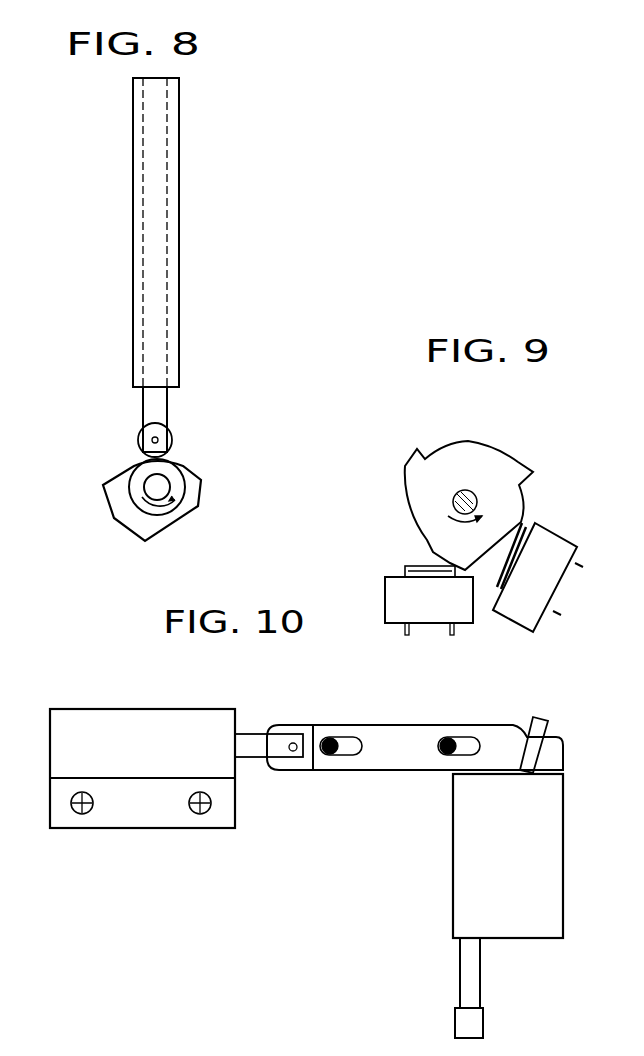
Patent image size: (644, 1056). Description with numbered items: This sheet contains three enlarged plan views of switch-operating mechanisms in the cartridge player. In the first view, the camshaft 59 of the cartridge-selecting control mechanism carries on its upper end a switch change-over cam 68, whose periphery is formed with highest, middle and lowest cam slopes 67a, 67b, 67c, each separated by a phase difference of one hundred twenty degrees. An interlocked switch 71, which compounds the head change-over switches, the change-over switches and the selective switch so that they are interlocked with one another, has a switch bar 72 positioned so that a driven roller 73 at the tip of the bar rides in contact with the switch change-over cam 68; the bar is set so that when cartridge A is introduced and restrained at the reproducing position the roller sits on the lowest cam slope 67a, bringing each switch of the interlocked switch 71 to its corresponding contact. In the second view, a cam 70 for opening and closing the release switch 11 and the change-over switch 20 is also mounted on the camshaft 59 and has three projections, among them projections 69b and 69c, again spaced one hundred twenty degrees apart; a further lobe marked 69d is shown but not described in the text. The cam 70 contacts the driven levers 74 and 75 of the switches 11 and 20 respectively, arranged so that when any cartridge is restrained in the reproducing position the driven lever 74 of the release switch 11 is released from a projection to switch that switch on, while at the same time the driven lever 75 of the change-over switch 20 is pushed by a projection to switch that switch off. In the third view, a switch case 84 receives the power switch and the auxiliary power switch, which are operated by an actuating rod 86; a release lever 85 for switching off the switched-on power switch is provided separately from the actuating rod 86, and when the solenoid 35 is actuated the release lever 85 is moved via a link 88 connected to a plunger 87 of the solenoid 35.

In FIG. 8, the interlocked switch 71 is at (157, 242).
In FIG. 8, the switch bar 72 is at (158, 410).
In FIG. 8, the driven roller 73 is at (172, 440).
In FIG. 8, the camshaft 59 is at (148, 478).
In FIG. 9, the camshaft 59 is at (464, 490).
In FIG. 8, the switch change-over cam 68 is at (118, 500).
In FIG. 8, the lowest cam slope 67a is at (183, 462).
In FIG. 8, the middle cam slope 67b is at (200, 498).
In FIG. 8, the highest cam slope 67c is at (112, 512).
In FIG. 9, the cam for opening and closing the switches 70 is at (466, 452).
In FIG. 9, the projection 69b is at (406, 468).
In FIG. 9, the projection 69c is at (536, 470).
In FIG. 9, the cam notch 69d is at (430, 556).
In FIG. 9, the driven lever 74 is at (514, 540).
In FIG. 9, the driven lever 75 is at (404, 568).
In FIG. 9, the change-over switch 20 is at (460, 612).
In FIG. 9, the release switch 11 is at (508, 611).
In FIG. 10, the solenoid 35 is at (190, 714).
In FIG. 10, the plunger 87 is at (256, 740).
In FIG. 10, the link 88 is at (362, 735).
In FIG. 10, the release lever 85 is at (528, 720).
In FIG. 10, the switch case 84 is at (460, 808).
In FIG. 10, the actuating rod 86 is at (467, 970).